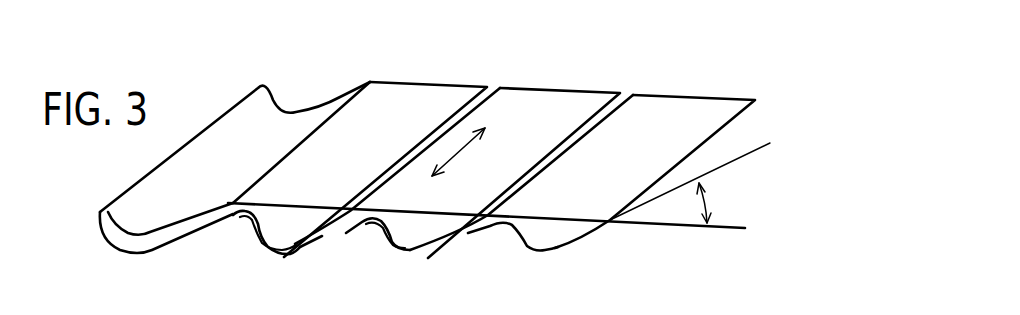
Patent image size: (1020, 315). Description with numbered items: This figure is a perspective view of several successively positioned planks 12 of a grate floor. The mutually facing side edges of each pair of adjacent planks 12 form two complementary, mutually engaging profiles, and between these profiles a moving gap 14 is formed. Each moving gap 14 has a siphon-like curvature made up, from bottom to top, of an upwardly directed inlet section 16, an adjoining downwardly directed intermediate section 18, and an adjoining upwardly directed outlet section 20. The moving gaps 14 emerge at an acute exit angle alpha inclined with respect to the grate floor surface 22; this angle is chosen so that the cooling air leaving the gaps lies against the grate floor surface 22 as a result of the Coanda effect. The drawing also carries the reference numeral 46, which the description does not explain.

The plank 12 is at (418, 97).
The moving gap 14 is at (299, 219).
The inlet section 16 is at (233, 220).
The intermediate section 18 is at (265, 247).
The outlet section 20 is at (321, 218).
The grate floor surface 22 is at (729, 222).
The gap between panels 46 is at (513, 269).